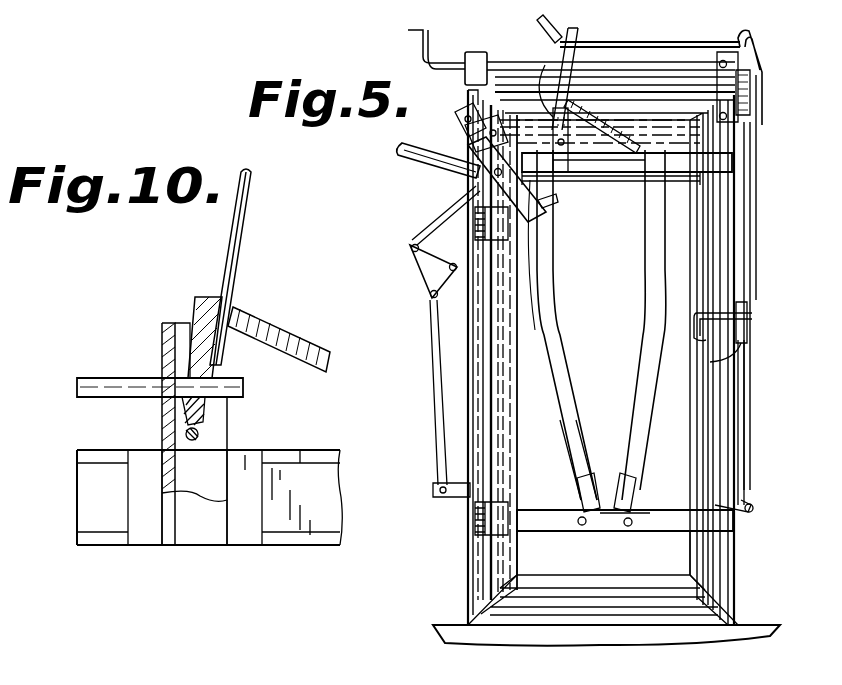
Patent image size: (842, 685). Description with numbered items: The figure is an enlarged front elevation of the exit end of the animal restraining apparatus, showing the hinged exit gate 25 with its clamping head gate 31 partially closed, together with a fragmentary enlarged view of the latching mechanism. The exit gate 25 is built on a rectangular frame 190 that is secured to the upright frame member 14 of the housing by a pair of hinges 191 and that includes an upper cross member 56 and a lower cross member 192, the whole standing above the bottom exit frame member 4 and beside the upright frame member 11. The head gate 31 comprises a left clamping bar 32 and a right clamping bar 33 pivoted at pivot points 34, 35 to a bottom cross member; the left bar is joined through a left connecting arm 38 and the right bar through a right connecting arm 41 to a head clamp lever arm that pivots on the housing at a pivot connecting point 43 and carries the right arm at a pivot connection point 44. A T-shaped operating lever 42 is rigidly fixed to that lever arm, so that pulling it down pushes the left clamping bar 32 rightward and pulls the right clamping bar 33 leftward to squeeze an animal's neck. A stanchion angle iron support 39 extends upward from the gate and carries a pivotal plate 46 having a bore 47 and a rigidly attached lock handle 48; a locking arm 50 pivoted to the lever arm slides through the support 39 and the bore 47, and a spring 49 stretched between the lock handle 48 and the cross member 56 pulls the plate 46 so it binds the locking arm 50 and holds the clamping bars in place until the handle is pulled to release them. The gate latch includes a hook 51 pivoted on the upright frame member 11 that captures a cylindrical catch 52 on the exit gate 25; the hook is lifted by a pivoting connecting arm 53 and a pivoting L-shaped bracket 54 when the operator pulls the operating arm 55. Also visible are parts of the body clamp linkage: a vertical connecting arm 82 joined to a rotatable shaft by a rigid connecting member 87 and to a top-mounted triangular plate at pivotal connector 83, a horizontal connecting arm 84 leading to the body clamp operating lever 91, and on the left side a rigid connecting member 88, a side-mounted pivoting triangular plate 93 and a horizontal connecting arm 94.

In FIG. 5, the bottom exit frame member 4 is at (600, 610).
In FIG. 5, the upright frame member 11 is at (728, 573).
In FIG. 5, the upright frame member 14 is at (472, 588).
In FIG. 5, the exit gate 25 is at (568, 478).
In FIG. 5, the clamping head gate 31 is at (662, 202).
In FIG. 10, the clamping head gate 31 is at (313, 456).
In FIG. 5, the left clamping bar 32 is at (556, 335).
In FIG. 5, the right clamping bar 33 is at (648, 270).
In FIG. 5, the pivot point 34 is at (568, 532).
In FIG. 5, the pivot point 35 is at (634, 530).
In FIG. 5, the left connecting arm 38 is at (556, 220).
In FIG. 5, the stanchion angle iron support 39 is at (584, 112).
In FIG. 10, the stanchion angle iron support 39 is at (160, 430).
In FIG. 5, the right connecting arm 41 is at (596, 172).
In FIG. 5, the operating lever 42 is at (410, 160).
In FIG. 5, the pivot connecting point 43 is at (472, 182).
In FIG. 5, the pivot connection point 44 is at (462, 112).
In FIG. 5, the pivotal plate 46 is at (545, 65).
In FIG. 10, the pivotal plate 46 is at (205, 424).
In FIG. 10, the bore 47 is at (228, 400).
In FIG. 5, the lock handle 48 is at (580, 32).
In FIG. 10, the lock handle 48 is at (228, 256).
In FIG. 5, the spring 49 is at (600, 100).
In FIG. 10, the spring 49 is at (272, 322).
In FIG. 5, the locking arm 50 is at (528, 133).
In FIG. 10, the locking arm 50 is at (97, 380).
In FIG. 5, the hook 51 is at (754, 316).
In FIG. 5, the cylindrical catch 52 is at (750, 342).
In FIG. 5, the connecting arm 53 is at (752, 203).
In FIG. 5, the L-shaped bracket 54 is at (752, 112).
In FIG. 5, the operating arm 55 is at (420, 44).
In FIG. 5, the upper cross member 56 is at (634, 172).
In FIG. 10, the upper cross member 56 is at (310, 548).
In FIG. 5, the vertical connecting arm 82 is at (752, 398).
In FIG. 5, the pivotal connector 83 is at (752, 40).
In FIG. 5, the horizontal connecting arm 84 is at (690, 42).
In FIG. 5, the rigid connecting member 87 is at (753, 511).
In FIG. 5, the rigid connecting member 88 is at (460, 500).
In FIG. 5, the body clamp operating lever 91 is at (535, 22).
In FIG. 5, the side-mounted pivoting triangular plate 93 is at (420, 292).
In FIG. 5, the horizontal connecting arm 94 is at (432, 230).
In FIG. 5, the rectangular frame 190 is at (690, 452).
In FIG. 5, the hinges 191 is at (475, 226).
In FIG. 5, the lower cross member 192 is at (600, 505).